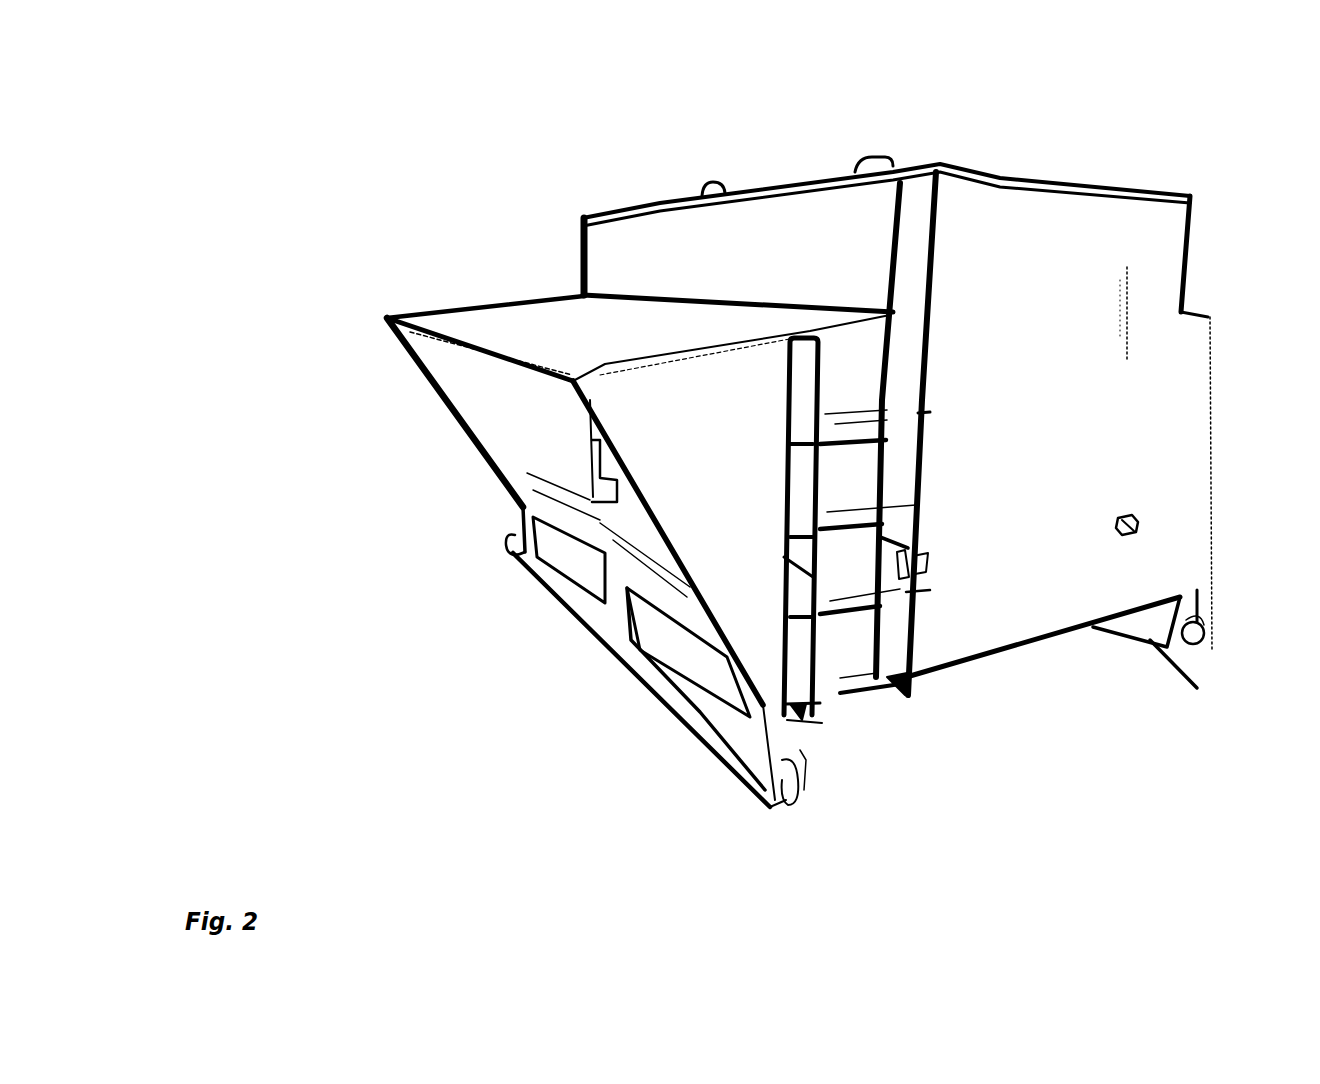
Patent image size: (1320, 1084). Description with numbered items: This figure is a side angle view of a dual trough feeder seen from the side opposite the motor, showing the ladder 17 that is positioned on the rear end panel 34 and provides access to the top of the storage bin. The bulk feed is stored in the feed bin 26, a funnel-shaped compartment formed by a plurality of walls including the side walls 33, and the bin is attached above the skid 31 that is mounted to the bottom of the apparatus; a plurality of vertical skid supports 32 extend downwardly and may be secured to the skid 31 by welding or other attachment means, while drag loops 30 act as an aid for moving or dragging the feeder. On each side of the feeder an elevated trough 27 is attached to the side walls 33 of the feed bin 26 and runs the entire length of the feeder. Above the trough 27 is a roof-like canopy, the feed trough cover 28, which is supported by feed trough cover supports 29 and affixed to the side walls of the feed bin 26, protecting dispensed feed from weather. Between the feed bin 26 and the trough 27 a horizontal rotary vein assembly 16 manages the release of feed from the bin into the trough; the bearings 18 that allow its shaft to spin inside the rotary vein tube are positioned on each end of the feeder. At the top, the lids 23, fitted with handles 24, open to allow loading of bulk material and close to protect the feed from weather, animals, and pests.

The rotary vein assembly 16 is at (610, 472).
The ladder 17 is at (820, 650).
The bearings 18 is at (1138, 527).
The lid doors 23 is at (1060, 174).
The handles 24 is at (890, 154).
The feed bin 26 is at (1057, 383).
The trough 27 is at (617, 507).
The feed trough cover 28 is at (588, 329).
The feed trough cover support 29 is at (463, 417).
The drag loop 30 is at (1203, 643).
The skid 31 is at (1160, 650).
The vertical skid support 32 is at (617, 605).
The side wall 33 is at (618, 243).
The rear end panel 34 is at (1133, 435).